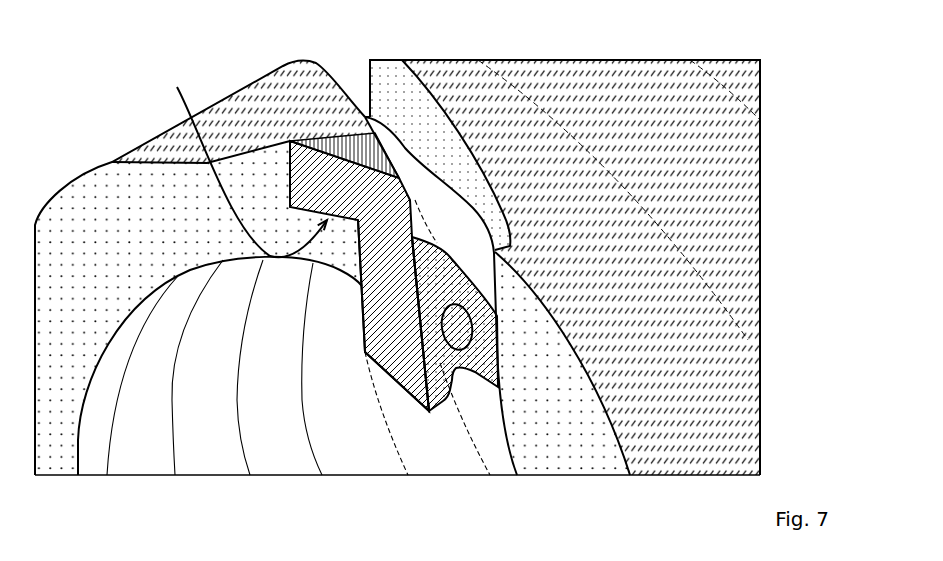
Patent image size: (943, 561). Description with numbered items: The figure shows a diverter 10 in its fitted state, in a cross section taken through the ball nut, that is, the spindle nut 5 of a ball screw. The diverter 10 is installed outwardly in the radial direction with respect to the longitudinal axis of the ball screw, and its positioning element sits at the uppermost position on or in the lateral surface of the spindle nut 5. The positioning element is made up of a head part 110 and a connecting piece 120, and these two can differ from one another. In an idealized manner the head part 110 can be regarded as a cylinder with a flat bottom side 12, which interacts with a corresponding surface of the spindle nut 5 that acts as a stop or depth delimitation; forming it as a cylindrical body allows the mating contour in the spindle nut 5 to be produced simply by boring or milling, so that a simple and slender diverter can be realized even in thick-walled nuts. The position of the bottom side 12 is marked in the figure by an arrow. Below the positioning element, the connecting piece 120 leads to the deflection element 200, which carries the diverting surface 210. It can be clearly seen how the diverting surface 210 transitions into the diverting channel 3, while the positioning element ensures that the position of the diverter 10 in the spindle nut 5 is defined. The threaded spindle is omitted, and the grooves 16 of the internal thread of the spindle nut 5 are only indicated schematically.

The diverting channel 3 is at (378, 208).
The spindle nut 5 is at (625, 117).
The diverter 10 is at (355, 303).
The bottom side 12 is at (245, 155).
The grooves 16 is at (153, 352).
The head part 110 is at (434, 201).
The connecting piece 120 is at (390, 275).
The deflection element 200 is at (408, 353).
The diverting surface 210 is at (472, 308).